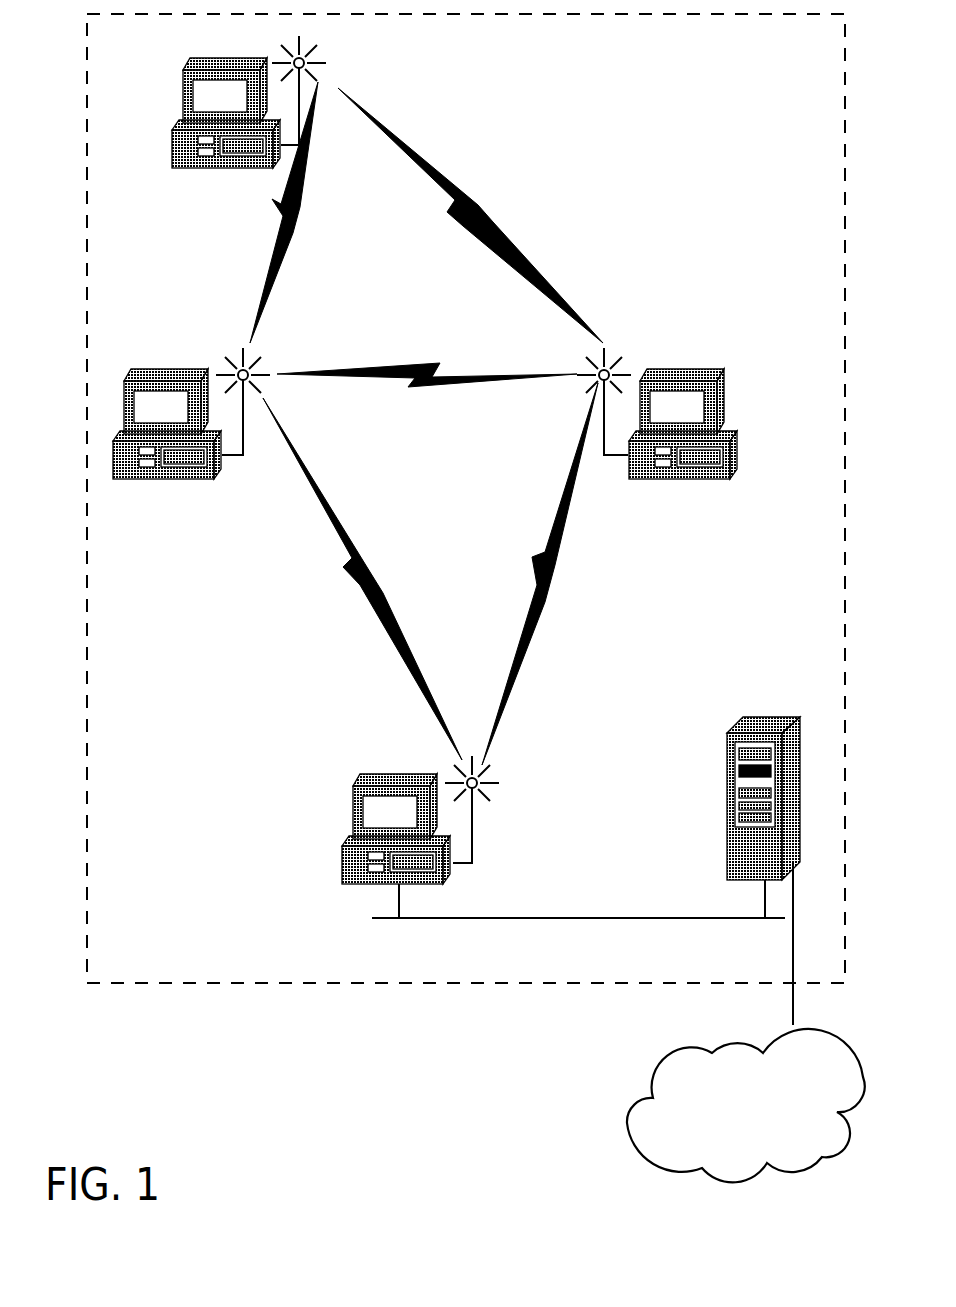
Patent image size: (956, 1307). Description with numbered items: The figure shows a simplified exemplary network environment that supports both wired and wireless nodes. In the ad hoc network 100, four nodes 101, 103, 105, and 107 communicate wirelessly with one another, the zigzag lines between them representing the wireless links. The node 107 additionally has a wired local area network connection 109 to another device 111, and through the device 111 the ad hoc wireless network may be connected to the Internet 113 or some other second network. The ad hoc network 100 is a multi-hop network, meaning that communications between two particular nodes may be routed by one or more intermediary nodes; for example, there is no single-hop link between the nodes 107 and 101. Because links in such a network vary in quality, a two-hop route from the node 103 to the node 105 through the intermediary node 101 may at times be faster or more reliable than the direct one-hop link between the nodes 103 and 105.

The ad hoc network 100 is at (842, 43).
The node 101 is at (249, 102).
The node 103 is at (191, 413).
The node 105 is at (657, 413).
The node 107 is at (420, 837).
The wired local area network connection 109 is at (528, 918).
The device 111 is at (760, 714).
The Internet 113 is at (727, 1131).